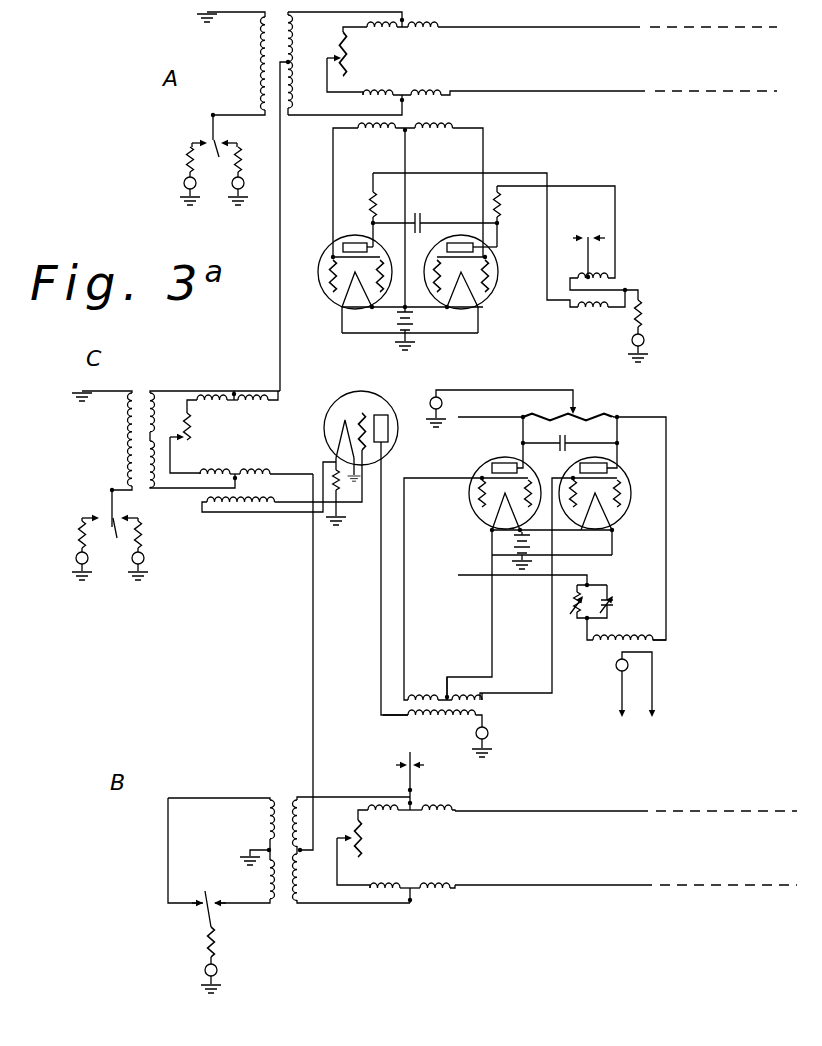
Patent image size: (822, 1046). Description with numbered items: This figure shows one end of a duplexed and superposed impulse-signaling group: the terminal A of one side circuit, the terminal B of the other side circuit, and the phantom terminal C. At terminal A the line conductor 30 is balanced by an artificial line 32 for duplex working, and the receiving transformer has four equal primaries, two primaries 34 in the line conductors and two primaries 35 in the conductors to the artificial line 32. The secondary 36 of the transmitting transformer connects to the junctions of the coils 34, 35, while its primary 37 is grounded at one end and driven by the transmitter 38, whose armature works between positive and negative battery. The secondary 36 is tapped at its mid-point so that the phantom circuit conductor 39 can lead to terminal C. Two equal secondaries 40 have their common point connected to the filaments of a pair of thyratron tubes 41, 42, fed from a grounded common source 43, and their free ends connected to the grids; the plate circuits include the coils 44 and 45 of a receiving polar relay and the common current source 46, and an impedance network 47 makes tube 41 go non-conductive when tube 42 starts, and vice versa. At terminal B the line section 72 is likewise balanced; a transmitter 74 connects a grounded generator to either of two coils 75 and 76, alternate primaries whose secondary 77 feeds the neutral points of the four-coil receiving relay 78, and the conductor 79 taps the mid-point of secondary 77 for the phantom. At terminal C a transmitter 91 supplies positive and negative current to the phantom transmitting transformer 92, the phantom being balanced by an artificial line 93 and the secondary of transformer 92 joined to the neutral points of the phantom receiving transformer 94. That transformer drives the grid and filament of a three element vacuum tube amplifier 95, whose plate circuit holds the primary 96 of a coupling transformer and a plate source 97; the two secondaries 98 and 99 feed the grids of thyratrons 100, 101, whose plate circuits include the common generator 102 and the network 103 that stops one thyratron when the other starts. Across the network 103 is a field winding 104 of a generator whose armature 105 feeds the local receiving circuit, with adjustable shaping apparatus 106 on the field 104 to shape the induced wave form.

The line conductor 30 is at (556, 50).
The artificial line 32 is at (340, 47).
The primaries 34 is at (432, 88).
The primaries 35 is at (380, 56).
The secondary of the transmitting transformer 36 is at (290, 80).
The primary of the transmitting transformer 37 is at (259, 65).
The transmitter 38 is at (214, 172).
The phantom circuit conductor 39 is at (262, 226).
The secondaries 40 is at (429, 136).
The thyratron tube 41 is at (326, 249).
The thyratron tube 42 is at (499, 277).
The common source 43 is at (416, 322).
The coil of receiving polar relay 44 is at (581, 312).
The coil of receiving polar relay 45 is at (578, 281).
The common current source 46 is at (646, 340).
The impedance network 47 is at (490, 207).
The line section 72 is at (543, 883).
The transmitter 74 is at (214, 918).
The coil 75 is at (264, 821).
The coil 76 is at (264, 877).
The secondary 77 is at (307, 845).
The receiving relay 78 is at (432, 882).
The conductor 79 is at (313, 588).
The transmitter 91 is at (110, 547).
The phantom transmitting transformer 92 is at (176, 445).
The artificial line 93 is at (190, 430).
The phantom receiving transformer 94 is at (236, 470).
The three element thermionic vacuum tube amplifier 95 is at (337, 405).
The primary of coupling transformer 96 is at (461, 720).
The source of plate current 97 is at (493, 735).
The secondary of coupling transformer 98 is at (421, 692).
The secondary of coupling transformer 99 is at (467, 687).
The thyratron 100 is at (477, 521).
The thyratron 101 is at (650, 523).
The common generator 102 is at (432, 398).
The network 103 is at (562, 527).
The field winding 104 is at (638, 629).
The armature 105 is at (616, 670).
The adjustable shaping apparatus 106 is at (605, 594).